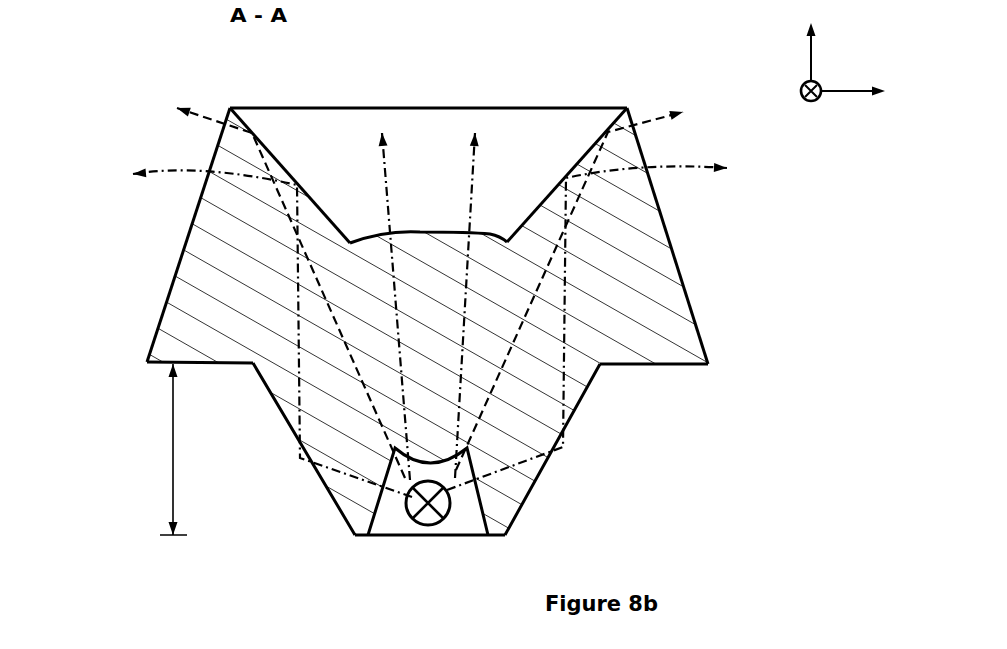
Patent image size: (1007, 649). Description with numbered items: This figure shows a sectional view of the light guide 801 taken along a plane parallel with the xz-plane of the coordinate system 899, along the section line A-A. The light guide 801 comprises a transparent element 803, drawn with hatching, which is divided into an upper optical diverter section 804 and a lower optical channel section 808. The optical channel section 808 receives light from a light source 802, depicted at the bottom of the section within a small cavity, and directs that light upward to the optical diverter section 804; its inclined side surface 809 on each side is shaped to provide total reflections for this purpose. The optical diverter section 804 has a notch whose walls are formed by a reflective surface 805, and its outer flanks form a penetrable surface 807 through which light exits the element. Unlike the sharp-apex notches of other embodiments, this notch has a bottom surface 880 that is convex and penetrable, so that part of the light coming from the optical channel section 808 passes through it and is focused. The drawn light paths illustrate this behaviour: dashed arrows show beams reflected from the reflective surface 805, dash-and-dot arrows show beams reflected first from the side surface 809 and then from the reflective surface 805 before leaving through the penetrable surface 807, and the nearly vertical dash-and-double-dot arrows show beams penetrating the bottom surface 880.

The light guide 801 is at (157, 127).
The light source 802 is at (428, 527).
The transparent element 803 is at (251, 337).
The optical diverter section 804 is at (742, 100).
The reflective surface 805 is at (278, 163).
The penetrable surface 807 is at (683, 272).
The optical channel section 808 is at (710, 368).
The side surface 809 is at (268, 407).
The bottom surface 880 is at (422, 232).
The coordinate system 899 is at (877, 61).